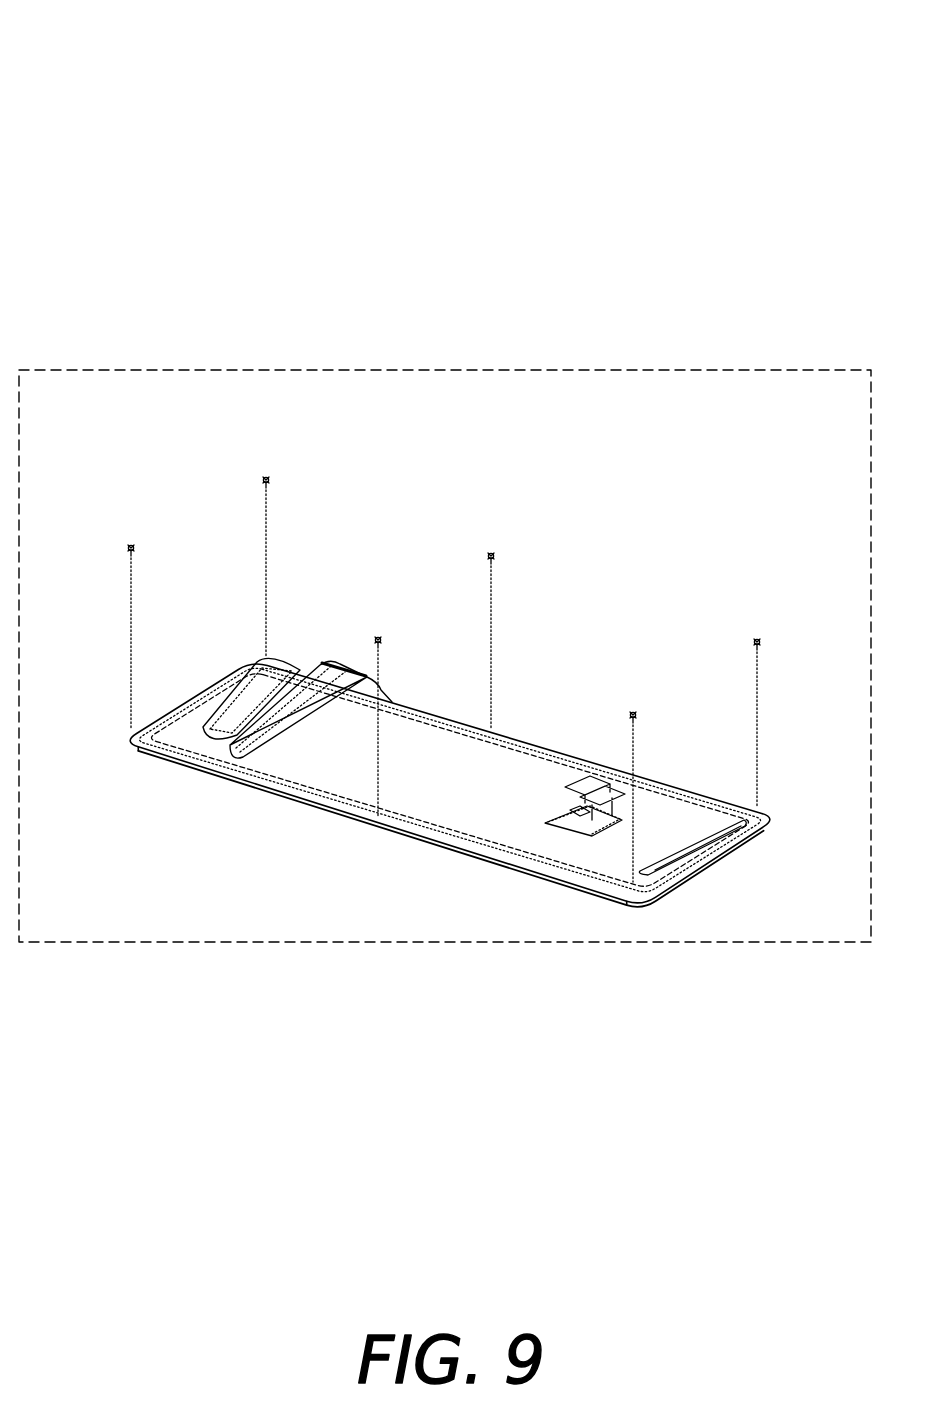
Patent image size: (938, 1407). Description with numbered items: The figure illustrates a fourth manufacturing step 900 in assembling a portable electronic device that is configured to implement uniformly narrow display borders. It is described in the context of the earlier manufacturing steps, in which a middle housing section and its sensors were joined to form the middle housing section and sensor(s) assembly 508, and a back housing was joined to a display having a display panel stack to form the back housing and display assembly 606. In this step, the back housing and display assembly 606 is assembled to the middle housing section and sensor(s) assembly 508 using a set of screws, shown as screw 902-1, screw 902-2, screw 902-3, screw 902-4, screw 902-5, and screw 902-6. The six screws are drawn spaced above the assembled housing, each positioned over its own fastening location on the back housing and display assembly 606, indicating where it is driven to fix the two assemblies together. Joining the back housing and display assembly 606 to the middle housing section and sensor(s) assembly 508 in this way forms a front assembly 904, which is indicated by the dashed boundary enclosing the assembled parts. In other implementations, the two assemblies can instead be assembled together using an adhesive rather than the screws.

The fourth manufacturing step 900 is at (792, 46).
The front assembly 904 is at (670, 362).
The back housing and display assembly 606 is at (480, 819).
The middle housing section and sensor(s) assembly 508 is at (190, 766).
The screw 902-1 is at (130, 542).
The screw 902-2 is at (268, 474).
The screw 902-3 is at (376, 634).
The screw 902-4 is at (493, 550).
The screw 902-5 is at (631, 709).
The screw 902-6 is at (759, 636).